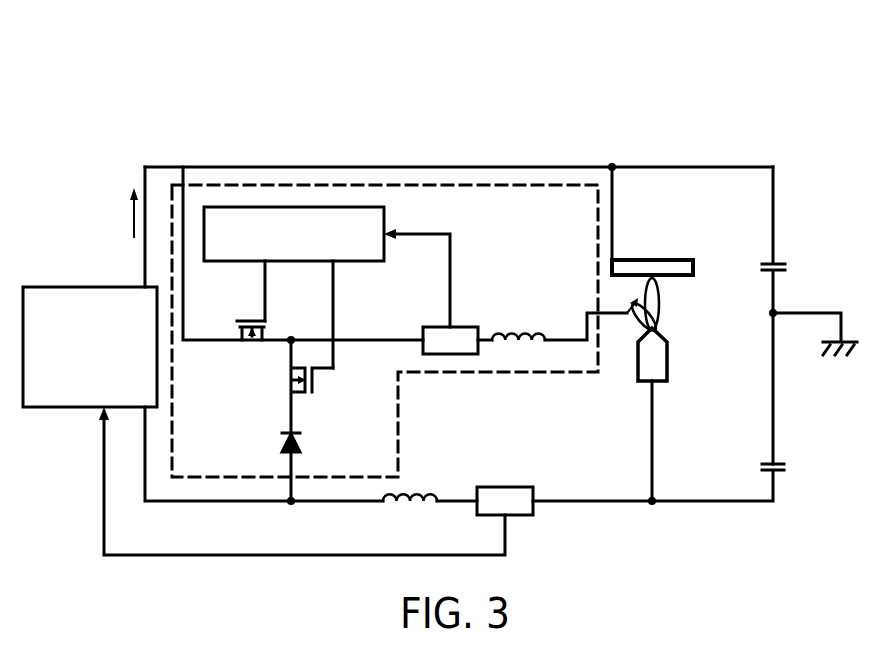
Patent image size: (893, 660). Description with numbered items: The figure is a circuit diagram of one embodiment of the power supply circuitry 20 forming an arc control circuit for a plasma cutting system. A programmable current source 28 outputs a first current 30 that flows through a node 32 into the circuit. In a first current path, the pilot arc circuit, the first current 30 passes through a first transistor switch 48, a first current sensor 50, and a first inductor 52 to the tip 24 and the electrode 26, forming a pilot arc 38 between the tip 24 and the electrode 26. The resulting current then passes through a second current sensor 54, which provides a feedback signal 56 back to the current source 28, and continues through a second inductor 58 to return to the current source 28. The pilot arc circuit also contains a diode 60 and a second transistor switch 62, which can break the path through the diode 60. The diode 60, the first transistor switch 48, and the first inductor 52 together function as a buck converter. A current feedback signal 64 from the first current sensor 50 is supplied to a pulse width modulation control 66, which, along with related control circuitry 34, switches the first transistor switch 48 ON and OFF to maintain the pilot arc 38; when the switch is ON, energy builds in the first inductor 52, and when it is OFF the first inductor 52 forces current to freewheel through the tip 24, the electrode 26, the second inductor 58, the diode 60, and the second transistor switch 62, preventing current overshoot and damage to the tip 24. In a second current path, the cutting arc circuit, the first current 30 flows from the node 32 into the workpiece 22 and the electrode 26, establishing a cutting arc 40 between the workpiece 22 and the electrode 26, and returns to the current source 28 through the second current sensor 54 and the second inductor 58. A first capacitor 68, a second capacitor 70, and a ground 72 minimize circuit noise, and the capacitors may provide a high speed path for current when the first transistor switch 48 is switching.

The plasma generation circuit 20 is at (181, 84).
The workpiece 22 is at (652, 259).
The tip 24 is at (666, 298).
The electrode 26 is at (668, 370).
The programmable current source 28 is at (90, 286).
The first current 30 is at (133, 220).
The node 32 is at (184, 166).
The control module 34 is at (520, 185).
The pilot arc 38 is at (634, 326).
The cutting arc 40 is at (660, 287).
The first transistor switch 48 is at (252, 318).
The first current sensor 50 is at (460, 325).
The first inductor 52 is at (523, 333).
The second current sensor 54 is at (504, 487).
The feedback signal 56 is at (102, 485).
The second inductor 58 is at (403, 490).
The diode 60 is at (300, 445).
The second transistor switch 62 is at (313, 378).
The current feedback signal 64 is at (418, 232).
The pulse width modulation control 66 is at (273, 206).
The first capacitor 68 is at (778, 263).
The second capacitor 70 is at (778, 458).
The ground 72 is at (857, 350).